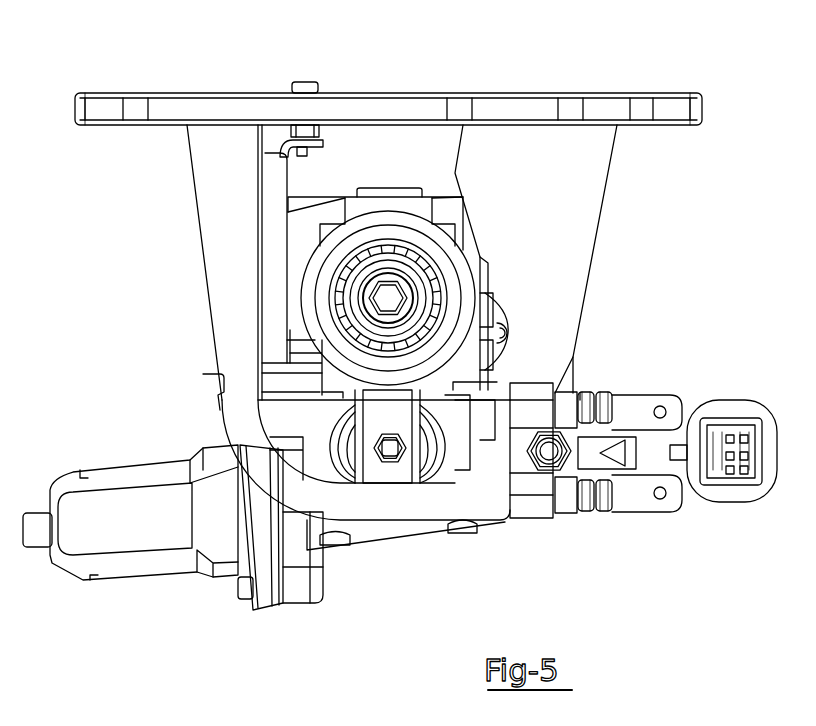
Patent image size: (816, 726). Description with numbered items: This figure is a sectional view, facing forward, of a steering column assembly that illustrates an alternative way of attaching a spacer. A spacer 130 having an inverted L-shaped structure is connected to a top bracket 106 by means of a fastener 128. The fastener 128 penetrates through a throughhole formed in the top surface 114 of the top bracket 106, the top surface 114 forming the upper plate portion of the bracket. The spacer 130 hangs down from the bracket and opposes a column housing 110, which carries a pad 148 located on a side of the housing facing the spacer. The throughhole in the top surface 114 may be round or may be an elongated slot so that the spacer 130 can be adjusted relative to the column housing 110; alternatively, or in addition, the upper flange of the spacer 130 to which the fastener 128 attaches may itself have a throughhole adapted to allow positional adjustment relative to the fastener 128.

The top bracket 106 is at (626, 149).
The column housing 110 is at (466, 265).
The top surface 114 is at (188, 93).
The fastener 128 is at (304, 82).
The spacer 130 is at (273, 197).
The pad 148 is at (295, 272).